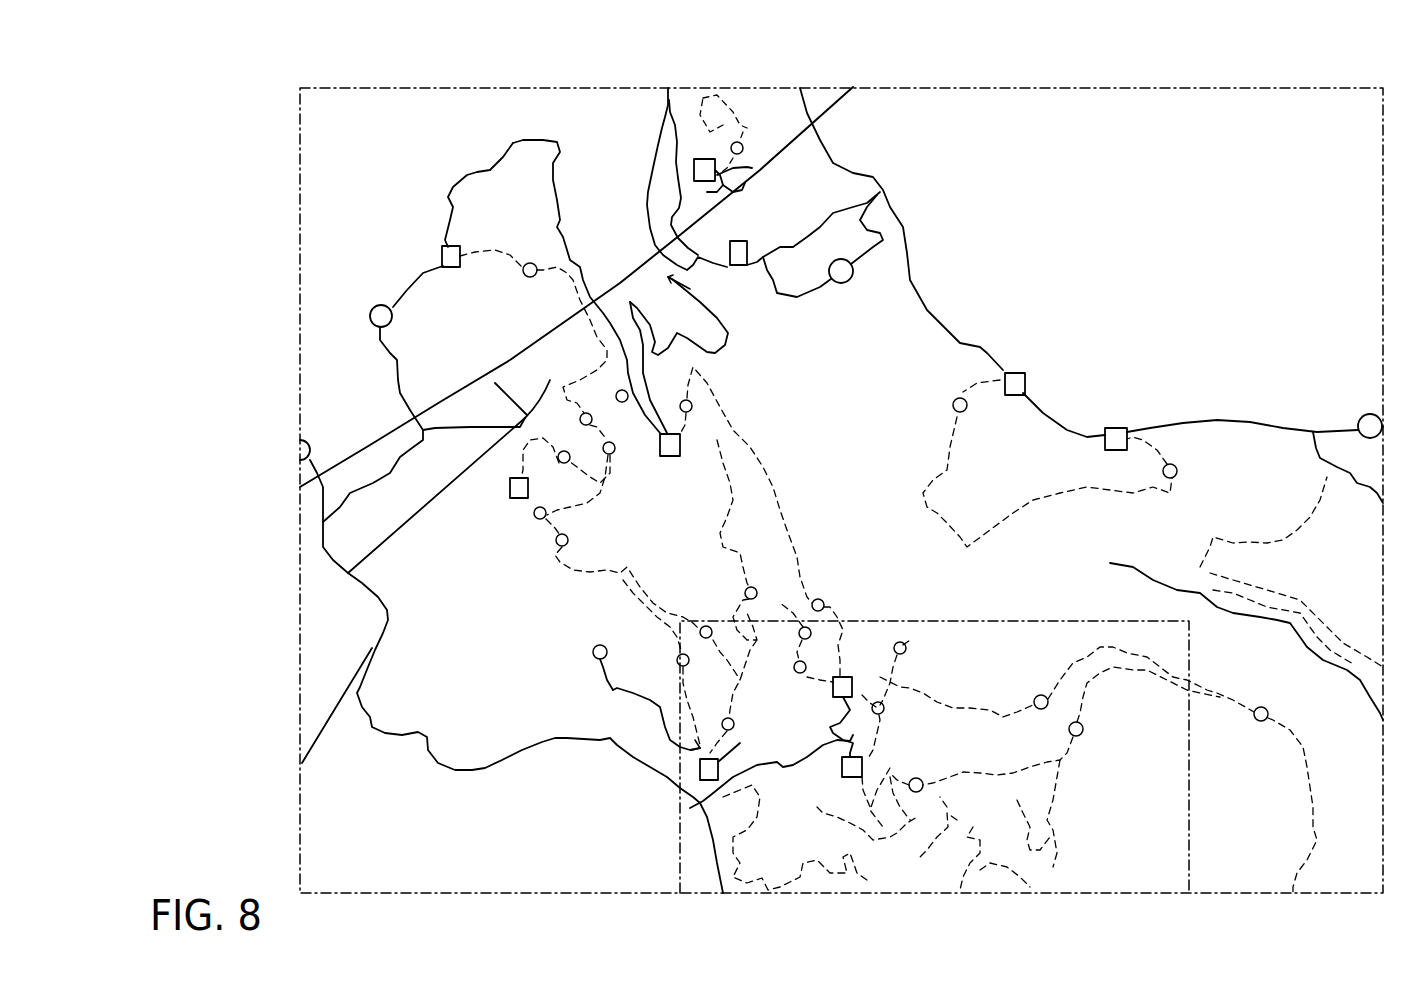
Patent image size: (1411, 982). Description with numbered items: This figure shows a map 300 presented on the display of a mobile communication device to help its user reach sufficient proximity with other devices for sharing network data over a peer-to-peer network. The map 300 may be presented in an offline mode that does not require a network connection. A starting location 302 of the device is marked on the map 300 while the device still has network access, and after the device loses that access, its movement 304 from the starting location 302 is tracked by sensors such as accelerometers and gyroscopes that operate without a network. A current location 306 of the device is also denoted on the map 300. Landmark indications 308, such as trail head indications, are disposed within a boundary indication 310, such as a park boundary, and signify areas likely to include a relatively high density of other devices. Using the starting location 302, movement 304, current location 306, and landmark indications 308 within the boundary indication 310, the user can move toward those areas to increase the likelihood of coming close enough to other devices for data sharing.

The map 300 is at (931, 63).
The starting location 302 is at (700, 765).
The movement 304 is at (617, 690).
The current location 306 is at (600, 645).
The landmark indications 308 is at (702, 780).
The boundary indication 310 is at (933, 621).